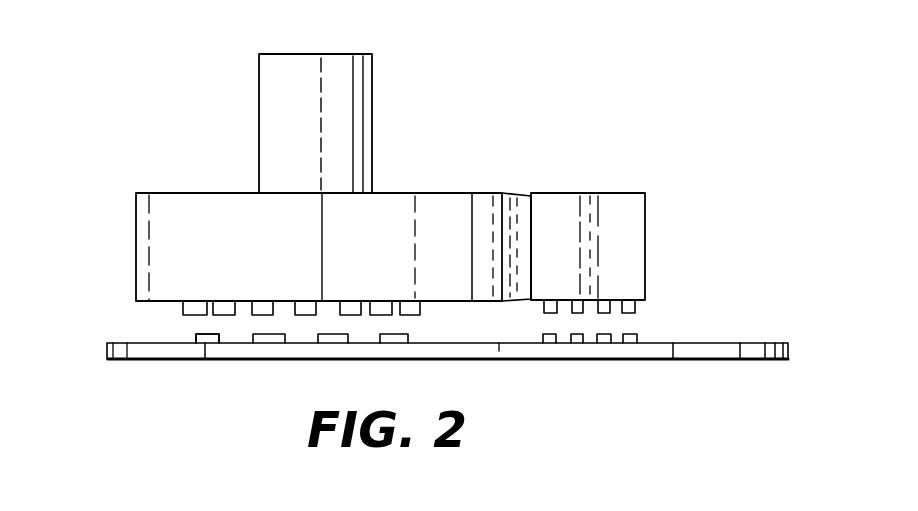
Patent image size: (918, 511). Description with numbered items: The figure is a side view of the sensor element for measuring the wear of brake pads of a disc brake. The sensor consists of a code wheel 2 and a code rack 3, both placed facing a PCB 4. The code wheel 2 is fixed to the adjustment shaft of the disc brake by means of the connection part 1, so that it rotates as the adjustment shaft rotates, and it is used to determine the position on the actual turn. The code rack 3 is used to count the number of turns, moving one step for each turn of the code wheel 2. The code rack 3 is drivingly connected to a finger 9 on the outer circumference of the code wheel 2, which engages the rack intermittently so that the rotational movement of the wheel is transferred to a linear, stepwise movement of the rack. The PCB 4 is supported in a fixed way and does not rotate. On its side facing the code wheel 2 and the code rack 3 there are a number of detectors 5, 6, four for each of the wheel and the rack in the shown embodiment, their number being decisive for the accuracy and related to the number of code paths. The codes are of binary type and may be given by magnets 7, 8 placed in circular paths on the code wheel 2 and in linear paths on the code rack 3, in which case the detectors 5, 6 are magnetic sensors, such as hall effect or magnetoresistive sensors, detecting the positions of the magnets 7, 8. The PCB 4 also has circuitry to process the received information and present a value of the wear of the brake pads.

The connection part 1 is at (348, 113).
The code wheel 2 is at (195, 202).
The code rack 3 is at (632, 207).
The PCB 4 is at (786, 342).
The detectors 5 is at (207, 337).
The detectors 6 is at (623, 337).
The magnets 7 is at (180, 310).
The magnets 8 is at (623, 312).
The finger 9 is at (512, 214).